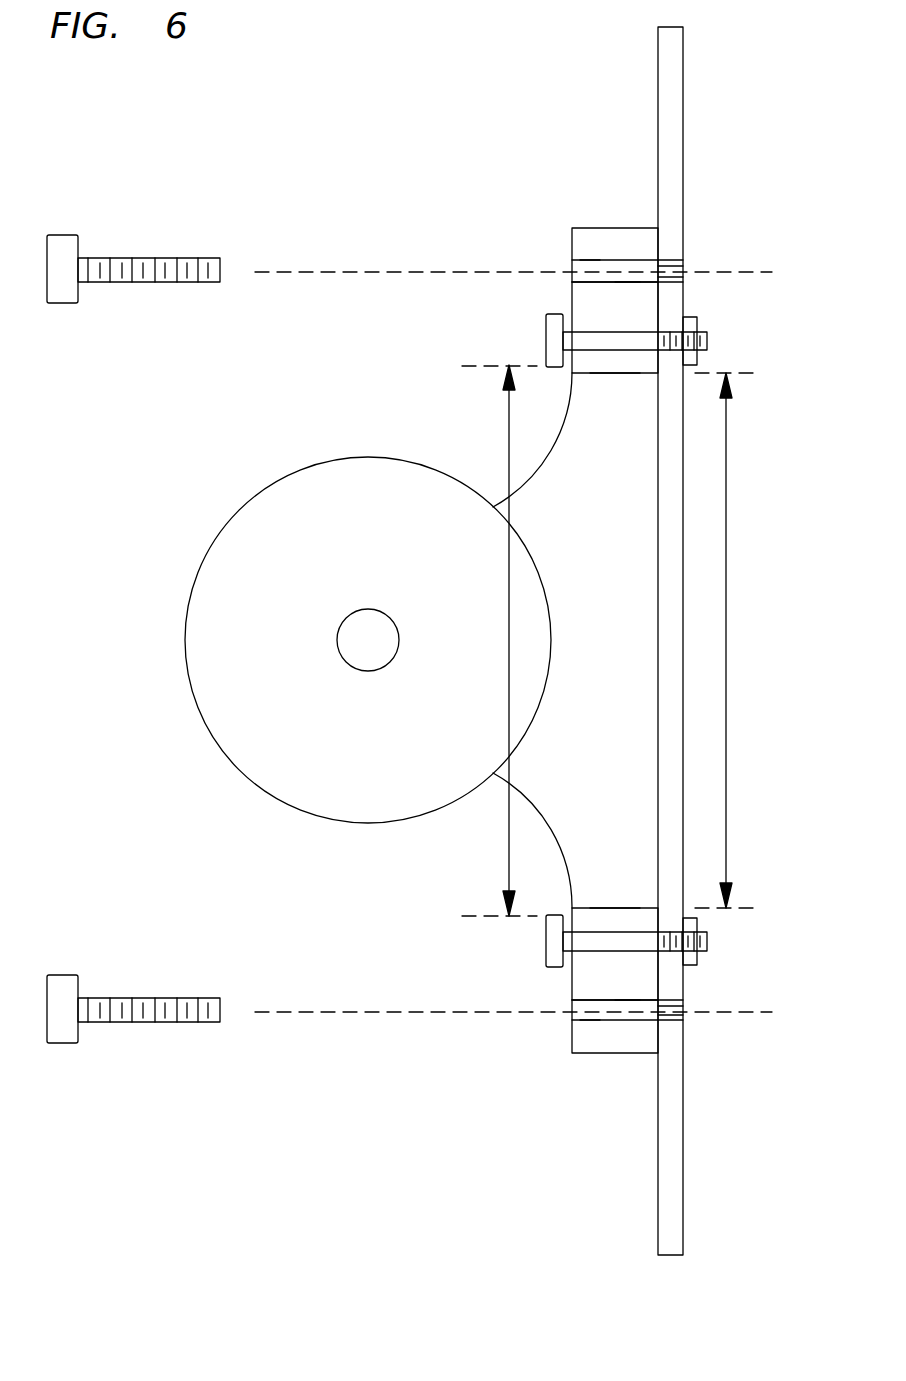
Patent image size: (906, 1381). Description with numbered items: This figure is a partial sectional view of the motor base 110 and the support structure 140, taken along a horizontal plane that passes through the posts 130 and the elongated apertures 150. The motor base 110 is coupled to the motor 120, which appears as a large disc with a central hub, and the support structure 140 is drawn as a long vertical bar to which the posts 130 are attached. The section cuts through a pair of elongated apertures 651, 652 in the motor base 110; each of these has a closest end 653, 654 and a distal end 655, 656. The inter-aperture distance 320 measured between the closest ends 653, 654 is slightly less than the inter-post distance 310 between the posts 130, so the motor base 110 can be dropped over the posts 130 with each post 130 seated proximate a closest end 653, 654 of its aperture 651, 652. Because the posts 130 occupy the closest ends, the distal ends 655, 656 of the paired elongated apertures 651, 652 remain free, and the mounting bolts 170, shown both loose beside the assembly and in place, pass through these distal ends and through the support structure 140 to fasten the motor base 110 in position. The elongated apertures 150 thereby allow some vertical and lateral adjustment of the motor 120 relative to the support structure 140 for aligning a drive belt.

The motor base 110 is at (620, 745).
The motor 120 is at (258, 747).
The posts 130 is at (553, 938).
The support structure 140 is at (668, 1218).
The elongated apertures 150 is at (583, 290).
The mounting bolts 170 is at (152, 258).
The inter-post distance 310 is at (508, 697).
The inter-aperture distance 320 is at (727, 636).
The elongated aperture 651 is at (591, 268).
The elongated aperture 652 is at (590, 1020).
The closest end 653 is at (613, 368).
The closest end 654 is at (617, 906).
The distal end 655 is at (628, 268).
The distal end 656 is at (622, 1020).